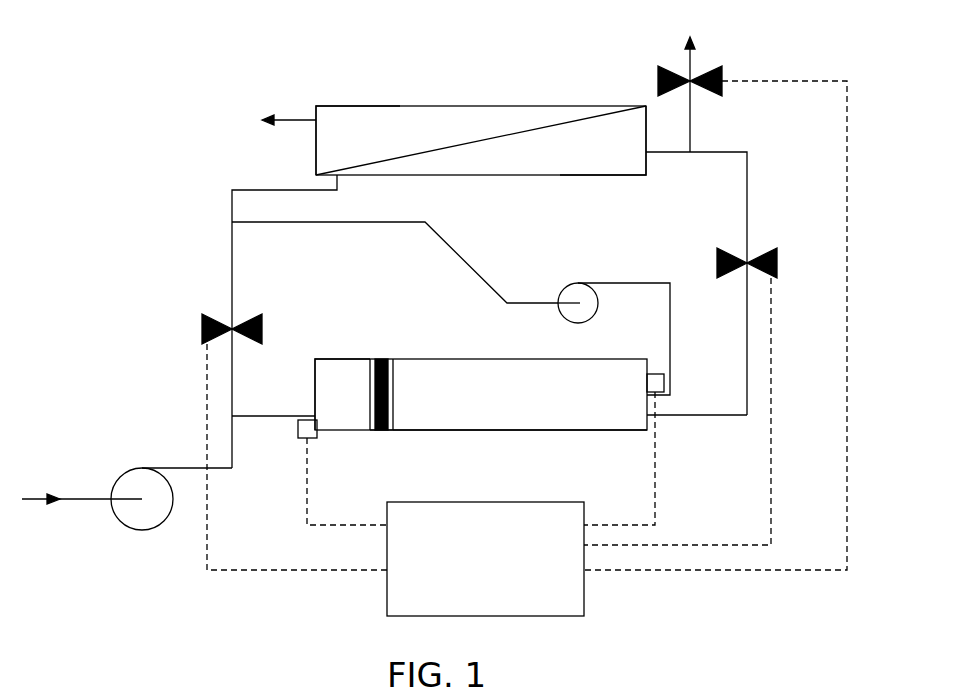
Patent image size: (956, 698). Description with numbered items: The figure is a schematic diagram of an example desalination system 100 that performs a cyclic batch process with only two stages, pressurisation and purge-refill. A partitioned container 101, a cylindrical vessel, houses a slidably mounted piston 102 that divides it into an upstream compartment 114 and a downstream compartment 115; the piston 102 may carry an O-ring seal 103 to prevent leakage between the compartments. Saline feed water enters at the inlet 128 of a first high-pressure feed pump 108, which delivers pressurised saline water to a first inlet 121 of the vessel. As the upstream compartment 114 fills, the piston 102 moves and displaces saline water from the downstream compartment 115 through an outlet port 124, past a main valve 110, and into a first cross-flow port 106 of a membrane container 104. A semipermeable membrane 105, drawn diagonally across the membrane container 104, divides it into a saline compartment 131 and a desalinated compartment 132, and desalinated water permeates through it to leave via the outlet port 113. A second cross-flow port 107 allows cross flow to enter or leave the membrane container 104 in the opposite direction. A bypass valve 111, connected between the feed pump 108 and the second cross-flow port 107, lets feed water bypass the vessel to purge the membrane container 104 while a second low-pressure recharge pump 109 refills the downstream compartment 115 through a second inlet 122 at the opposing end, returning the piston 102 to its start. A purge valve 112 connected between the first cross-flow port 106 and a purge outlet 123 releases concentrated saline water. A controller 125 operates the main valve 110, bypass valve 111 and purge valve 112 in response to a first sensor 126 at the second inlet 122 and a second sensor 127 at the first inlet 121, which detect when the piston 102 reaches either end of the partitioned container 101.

The desalination system 100 is at (150, 80).
The partitioned container 101 is at (502, 432).
The piston 102 is at (375, 432).
The O-ring seal 103 is at (382, 357).
The membrane container 104 is at (515, 104).
The semipermeable membrane 105 is at (430, 148).
The first cross-flow port 106 is at (648, 158).
The second cross-flow port 107 is at (330, 180).
The first high-pressure feed pump 108 is at (135, 487).
The second low-pressure recharge pump 109 is at (570, 288).
The main valve 110 is at (765, 250).
The bypass valve 111 is at (205, 322).
The purge valve 112 is at (724, 76).
The outlet port 113 is at (288, 108).
The upstream compartment 114 is at (362, 405).
The downstream compartment 115 is at (548, 405).
The first inlet 121 is at (313, 410).
The second inlet 122 is at (643, 392).
The purge outlet 123 is at (694, 55).
The outlet port 124 is at (652, 413).
The controller 125 is at (508, 573).
The first sensor 126 is at (657, 372).
The second sensor 127 is at (298, 438).
The inlet 128 is at (90, 500).
The saline compartment 131 is at (606, 163).
The desalinated compartment 132 is at (381, 146).